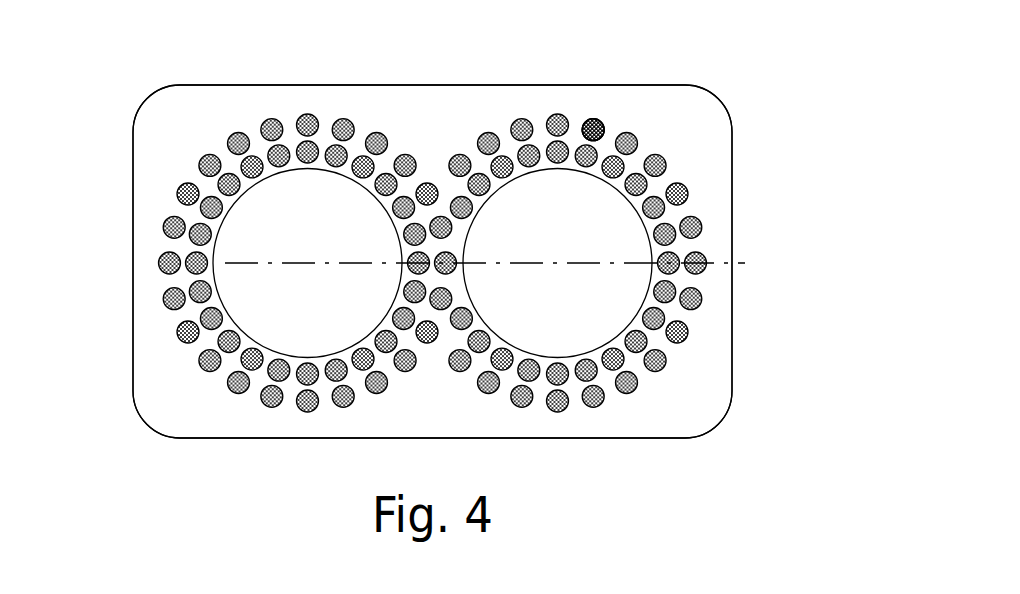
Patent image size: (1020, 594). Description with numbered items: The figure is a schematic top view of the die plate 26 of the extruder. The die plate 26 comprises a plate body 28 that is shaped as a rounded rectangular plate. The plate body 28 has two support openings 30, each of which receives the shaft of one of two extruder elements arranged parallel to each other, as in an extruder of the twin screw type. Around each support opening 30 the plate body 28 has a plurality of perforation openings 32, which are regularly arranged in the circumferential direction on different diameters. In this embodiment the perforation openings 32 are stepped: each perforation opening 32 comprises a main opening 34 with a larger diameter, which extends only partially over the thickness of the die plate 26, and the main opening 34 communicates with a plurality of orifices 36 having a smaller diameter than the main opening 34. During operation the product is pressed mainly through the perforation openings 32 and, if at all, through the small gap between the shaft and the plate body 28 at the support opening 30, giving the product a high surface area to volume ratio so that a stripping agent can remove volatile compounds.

The die plate 26 is at (128, 68).
The plate body 28 is at (173, 118).
The support openings 30 is at (257, 235).
The perforation openings 32 is at (282, 107).
The main opening 34 is at (607, 132).
The orifices 36 is at (582, 118).